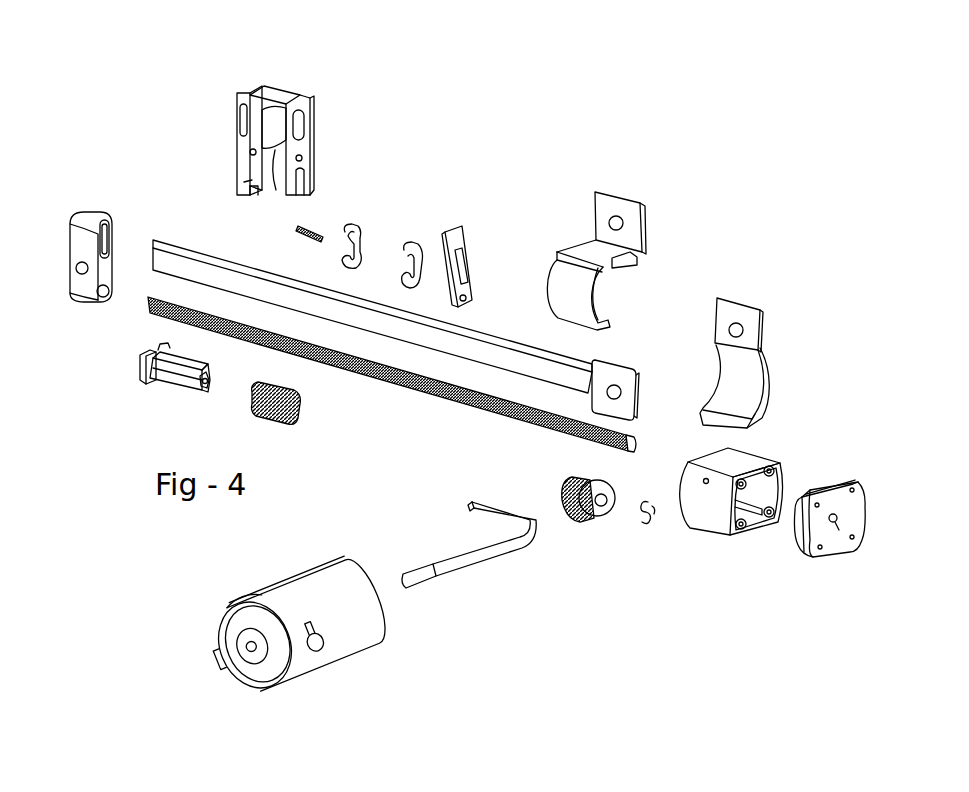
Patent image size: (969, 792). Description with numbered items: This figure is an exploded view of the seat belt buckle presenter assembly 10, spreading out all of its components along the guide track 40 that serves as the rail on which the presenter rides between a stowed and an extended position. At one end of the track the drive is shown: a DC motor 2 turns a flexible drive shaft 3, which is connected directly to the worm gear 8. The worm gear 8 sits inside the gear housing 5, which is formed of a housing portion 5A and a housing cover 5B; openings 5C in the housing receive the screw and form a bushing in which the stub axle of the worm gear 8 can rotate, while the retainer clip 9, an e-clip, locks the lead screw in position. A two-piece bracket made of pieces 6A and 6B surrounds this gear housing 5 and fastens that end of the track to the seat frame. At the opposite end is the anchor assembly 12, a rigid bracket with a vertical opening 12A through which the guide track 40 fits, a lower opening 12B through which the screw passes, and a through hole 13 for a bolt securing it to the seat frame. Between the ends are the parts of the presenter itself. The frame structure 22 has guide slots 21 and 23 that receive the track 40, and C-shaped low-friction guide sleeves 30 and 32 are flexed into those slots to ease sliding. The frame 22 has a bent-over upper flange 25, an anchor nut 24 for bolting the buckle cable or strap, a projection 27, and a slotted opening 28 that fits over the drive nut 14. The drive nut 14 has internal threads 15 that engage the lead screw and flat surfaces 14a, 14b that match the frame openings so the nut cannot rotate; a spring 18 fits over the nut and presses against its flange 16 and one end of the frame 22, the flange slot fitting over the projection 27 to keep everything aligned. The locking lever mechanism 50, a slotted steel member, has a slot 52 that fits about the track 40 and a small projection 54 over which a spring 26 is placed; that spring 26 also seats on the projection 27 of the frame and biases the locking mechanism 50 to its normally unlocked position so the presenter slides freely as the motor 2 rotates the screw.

The motor 2 is at (342, 632).
The flexible drive shaft 3 is at (481, 571).
The gear housing 5 is at (769, 537).
The gear housing portion 5A is at (706, 520).
The housing cover 5B is at (822, 552).
The housing opening 5C is at (692, 468).
The bracket piece 6A is at (606, 223).
The bracket piece 6B is at (732, 330).
The worm gear 8 is at (573, 526).
The retainer clip 9 is at (648, 526).
The seat belt buckle presenter assembly 10 is at (358, 197).
The anchor assembly 12 is at (75, 212).
The vertical opening 12A is at (106, 240).
The lower opening 12B is at (105, 296).
The through hole 13 is at (80, 272).
The drive nut 14 is at (166, 386).
The flat surface 14a is at (140, 368).
The flat surface 14b is at (208, 382).
The internal threads 15 is at (204, 392).
The flange 16 is at (170, 347).
The spring 18 is at (280, 426).
The guide slot 21 is at (246, 118).
The frame structure 22 is at (236, 131).
The guide slot 23 is at (305, 128).
The anchor nut 24 is at (273, 150).
The upper flange 25 is at (276, 96).
The spring 26 is at (316, 231).
The projection 27 is at (250, 156).
The slotted opening 28 is at (244, 188).
The guide sleeve 30 is at (354, 228).
The guide sleeve 32 is at (413, 246).
The guide track 40 is at (266, 291).
The locking lever mechanism 50 is at (454, 230).
The slot 52 is at (468, 264).
The projection 54 is at (468, 300).